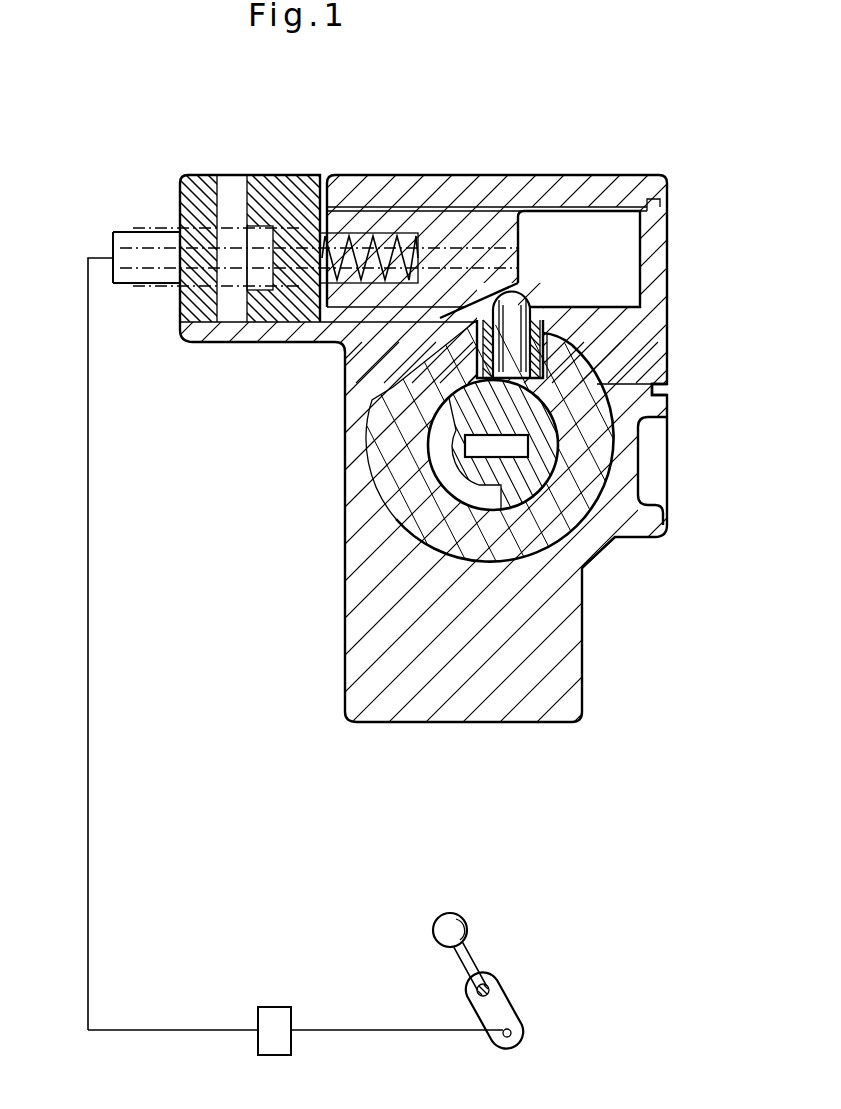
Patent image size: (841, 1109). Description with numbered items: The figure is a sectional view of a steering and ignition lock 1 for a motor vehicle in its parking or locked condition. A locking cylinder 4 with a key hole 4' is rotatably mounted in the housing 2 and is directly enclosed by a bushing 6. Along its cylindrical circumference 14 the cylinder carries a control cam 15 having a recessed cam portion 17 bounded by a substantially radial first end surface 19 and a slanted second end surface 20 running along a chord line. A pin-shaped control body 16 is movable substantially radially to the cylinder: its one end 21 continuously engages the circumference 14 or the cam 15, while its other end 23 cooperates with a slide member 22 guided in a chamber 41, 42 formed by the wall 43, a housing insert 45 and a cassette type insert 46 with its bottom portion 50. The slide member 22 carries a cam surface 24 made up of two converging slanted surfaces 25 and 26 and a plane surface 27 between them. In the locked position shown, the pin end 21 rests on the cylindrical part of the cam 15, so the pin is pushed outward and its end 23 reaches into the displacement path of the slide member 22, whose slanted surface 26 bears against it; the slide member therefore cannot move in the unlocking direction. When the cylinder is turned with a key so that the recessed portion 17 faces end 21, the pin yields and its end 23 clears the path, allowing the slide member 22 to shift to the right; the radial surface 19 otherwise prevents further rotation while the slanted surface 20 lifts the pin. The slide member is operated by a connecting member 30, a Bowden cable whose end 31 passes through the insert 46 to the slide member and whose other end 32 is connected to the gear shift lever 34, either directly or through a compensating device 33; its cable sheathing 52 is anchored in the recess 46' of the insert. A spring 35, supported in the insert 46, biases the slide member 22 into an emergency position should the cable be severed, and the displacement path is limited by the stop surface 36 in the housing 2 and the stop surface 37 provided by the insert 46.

The steering and ignition lock 1 is at (402, 737).
The housing 2 is at (343, 688).
The locking cylinder 4 is at (538, 441).
The key hole 4' is at (669, 476).
The bushing 6 is at (567, 517).
The circumference 14 is at (507, 447).
The control cam 15 is at (444, 391).
The control body 16 is at (523, 322).
The recessed cam portion 17 is at (473, 490).
The first end surface 19 is at (500, 513).
The second end surface 20 is at (455, 428).
The one end 21 is at (540, 360).
The slide member 22 is at (417, 208).
The other end 23 is at (513, 308).
The cam surface 24 is at (433, 297).
The slanted surface 25 is at (340, 355).
The slanted surface 26 is at (513, 297).
The plane surface 27 is at (458, 300).
The connecting member 30 is at (88, 888).
The end 31 is at (360, 232).
The other end 32 is at (190, 1031).
The compensating device 33 is at (275, 1022).
The gear shift lever 34 is at (497, 1007).
The spring 35 is at (400, 235).
The stop surface 36 is at (627, 274).
The stop surface 37 is at (312, 210).
The chamber 41 is at (595, 238).
The chamber 42 is at (300, 340).
The wall 43 is at (583, 192).
The housing insert 45 is at (667, 384).
The insert type housing member 46 is at (250, 221).
The recess 46' is at (195, 283).
The bottom portion 50 is at (357, 332).
The cable sheathing 52 is at (157, 228).